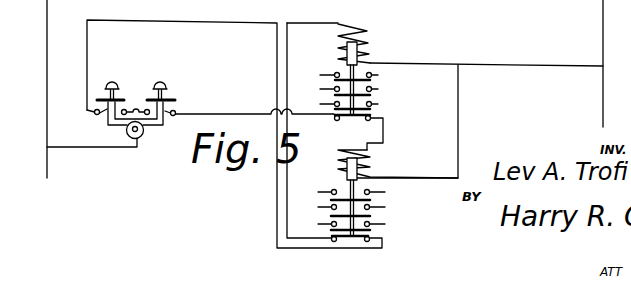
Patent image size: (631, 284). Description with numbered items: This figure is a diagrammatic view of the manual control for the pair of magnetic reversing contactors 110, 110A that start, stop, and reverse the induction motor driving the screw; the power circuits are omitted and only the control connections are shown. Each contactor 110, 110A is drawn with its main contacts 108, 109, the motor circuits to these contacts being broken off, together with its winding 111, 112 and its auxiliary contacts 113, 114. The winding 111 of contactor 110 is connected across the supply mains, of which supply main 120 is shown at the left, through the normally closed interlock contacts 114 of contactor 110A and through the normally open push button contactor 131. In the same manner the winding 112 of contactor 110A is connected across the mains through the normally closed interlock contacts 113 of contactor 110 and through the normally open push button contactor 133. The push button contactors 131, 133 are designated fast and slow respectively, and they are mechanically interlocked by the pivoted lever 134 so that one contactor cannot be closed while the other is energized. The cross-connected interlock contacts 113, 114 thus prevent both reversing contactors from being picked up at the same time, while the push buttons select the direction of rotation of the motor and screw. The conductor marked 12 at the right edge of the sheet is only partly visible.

The supply main 120 is at (46, 56).
The pivoted lever 134 is at (111, 126).
The push button contactor 131 is at (96, 118).
The push button contactor 133 is at (175, 116).
The magnetic reversing contactor 110 is at (356, 80).
The winding 111 is at (365, 34).
The main contacts 108 is at (390, 109).
The auxiliary contacts 113 is at (338, 120).
The magnetic reversing contactor 110A is at (377, 210).
The winding 112 is at (364, 161).
The main contacts 109 is at (392, 228).
The auxiliary contacts 114 is at (353, 241).
The supply conductor 12 is at (604, 40).